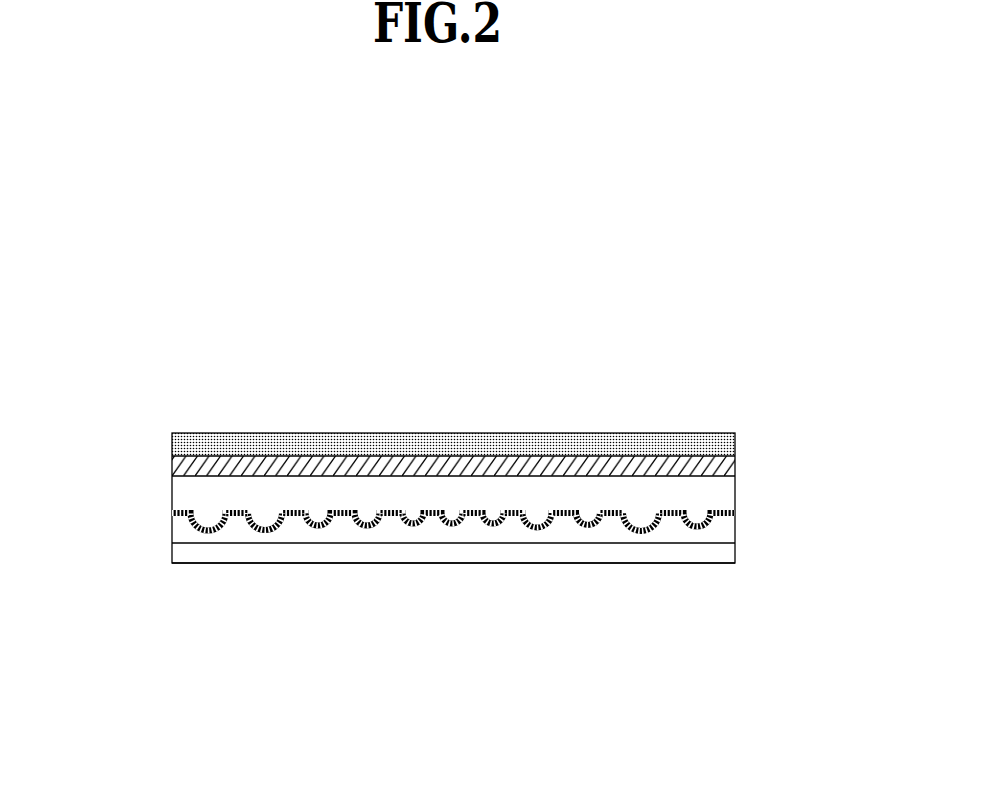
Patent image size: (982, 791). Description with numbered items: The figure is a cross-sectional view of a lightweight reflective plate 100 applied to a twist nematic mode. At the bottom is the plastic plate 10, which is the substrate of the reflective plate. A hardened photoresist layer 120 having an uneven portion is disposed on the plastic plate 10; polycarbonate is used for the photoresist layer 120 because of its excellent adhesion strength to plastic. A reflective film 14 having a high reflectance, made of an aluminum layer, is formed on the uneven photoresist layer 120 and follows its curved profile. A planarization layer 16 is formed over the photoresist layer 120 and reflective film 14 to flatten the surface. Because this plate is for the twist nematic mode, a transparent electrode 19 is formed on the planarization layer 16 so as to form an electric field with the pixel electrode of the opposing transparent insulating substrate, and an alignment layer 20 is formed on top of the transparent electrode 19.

The organic light emitting display device 100 is at (138, 364).
The plastic plate 10 is at (728, 552).
The photoresist layer 120 is at (725, 532).
The reflective film 14 is at (698, 528).
The planarization layer 16 is at (172, 493).
The transparent electrode 19 is at (735, 458).
The alignment layer 20 is at (735, 432).